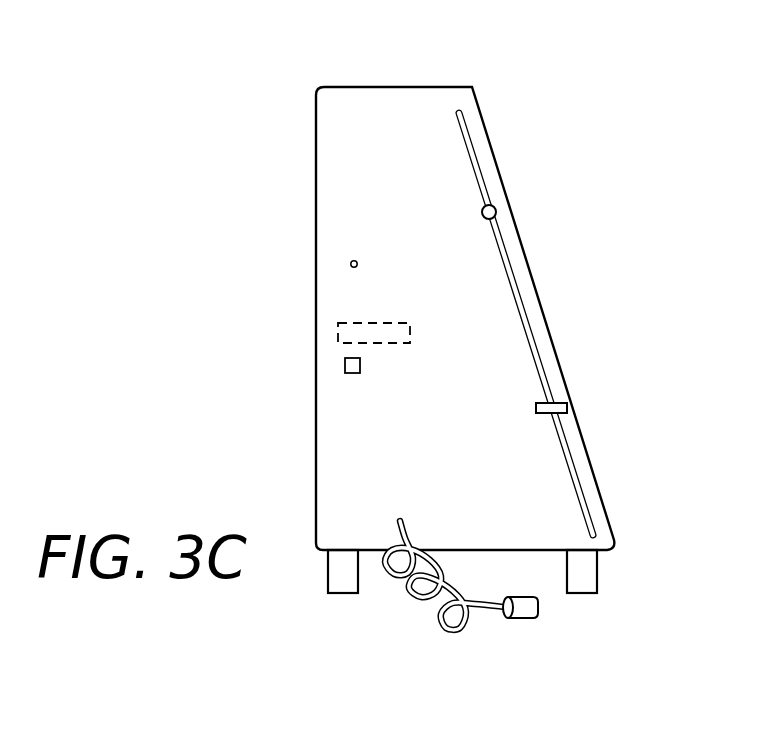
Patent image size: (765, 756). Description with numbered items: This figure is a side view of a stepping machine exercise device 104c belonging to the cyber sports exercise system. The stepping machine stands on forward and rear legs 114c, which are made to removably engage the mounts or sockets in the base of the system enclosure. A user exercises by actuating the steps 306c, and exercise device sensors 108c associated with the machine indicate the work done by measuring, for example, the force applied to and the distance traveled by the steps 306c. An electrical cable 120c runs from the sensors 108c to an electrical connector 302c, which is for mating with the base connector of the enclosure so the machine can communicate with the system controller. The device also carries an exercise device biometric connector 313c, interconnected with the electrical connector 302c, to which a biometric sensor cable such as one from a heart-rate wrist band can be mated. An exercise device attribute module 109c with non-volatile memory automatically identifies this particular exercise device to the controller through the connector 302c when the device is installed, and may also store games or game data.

The stepping machine exercise device 104c is at (541, 196).
The forward and rear legs 114c is at (327, 574).
The steps 306c is at (567, 405).
The exercise device biometric connector 313c is at (354, 260).
The exercise device sensors 108c is at (378, 321).
The exercise device attribute module 109c is at (352, 373).
The electrical cable 120c is at (452, 578).
The electrical connector 302c is at (535, 597).